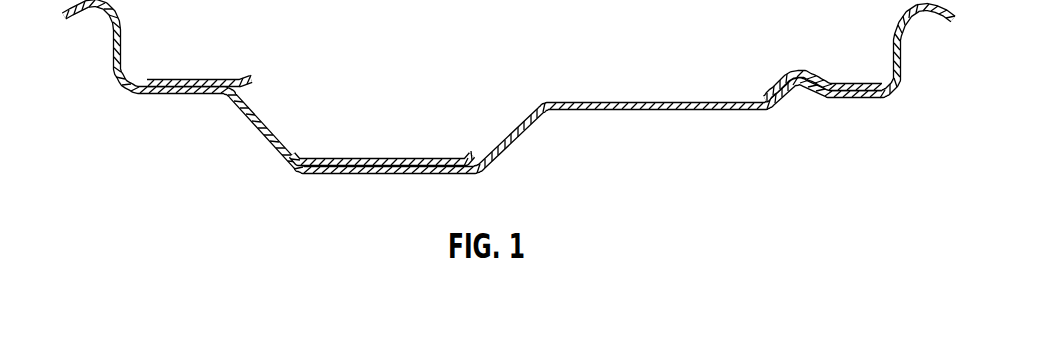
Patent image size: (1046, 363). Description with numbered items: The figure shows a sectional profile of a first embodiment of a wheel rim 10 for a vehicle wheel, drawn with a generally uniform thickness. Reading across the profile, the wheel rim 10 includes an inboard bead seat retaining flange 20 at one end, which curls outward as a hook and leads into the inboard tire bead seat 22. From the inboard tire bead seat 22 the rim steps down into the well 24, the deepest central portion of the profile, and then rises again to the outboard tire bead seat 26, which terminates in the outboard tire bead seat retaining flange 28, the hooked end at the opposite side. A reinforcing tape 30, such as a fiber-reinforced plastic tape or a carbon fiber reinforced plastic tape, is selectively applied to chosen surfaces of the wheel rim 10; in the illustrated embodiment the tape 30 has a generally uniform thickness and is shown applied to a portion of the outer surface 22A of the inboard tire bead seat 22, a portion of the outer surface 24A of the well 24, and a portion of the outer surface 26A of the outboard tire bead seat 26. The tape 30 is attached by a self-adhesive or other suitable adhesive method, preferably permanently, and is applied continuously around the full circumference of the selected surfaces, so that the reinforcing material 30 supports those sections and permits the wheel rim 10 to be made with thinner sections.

The wheel rim 10 is at (556, 103).
The inboard bead seat retaining flange 20 is at (905, 58).
The inboard tire bead seat 22 is at (850, 100).
The outer surface of the inboard tire bead seat 22A is at (793, 85).
The well 24 is at (490, 147).
The outer surface of the well 24A is at (342, 175).
The outboard tire bead seat 26 is at (265, 125).
The outer surface of the outboard tire bead seat 26A is at (173, 93).
The outboard tire bead seat retaining flange 28 is at (113, 43).
The reinforcing tape 30 is at (180, 77).